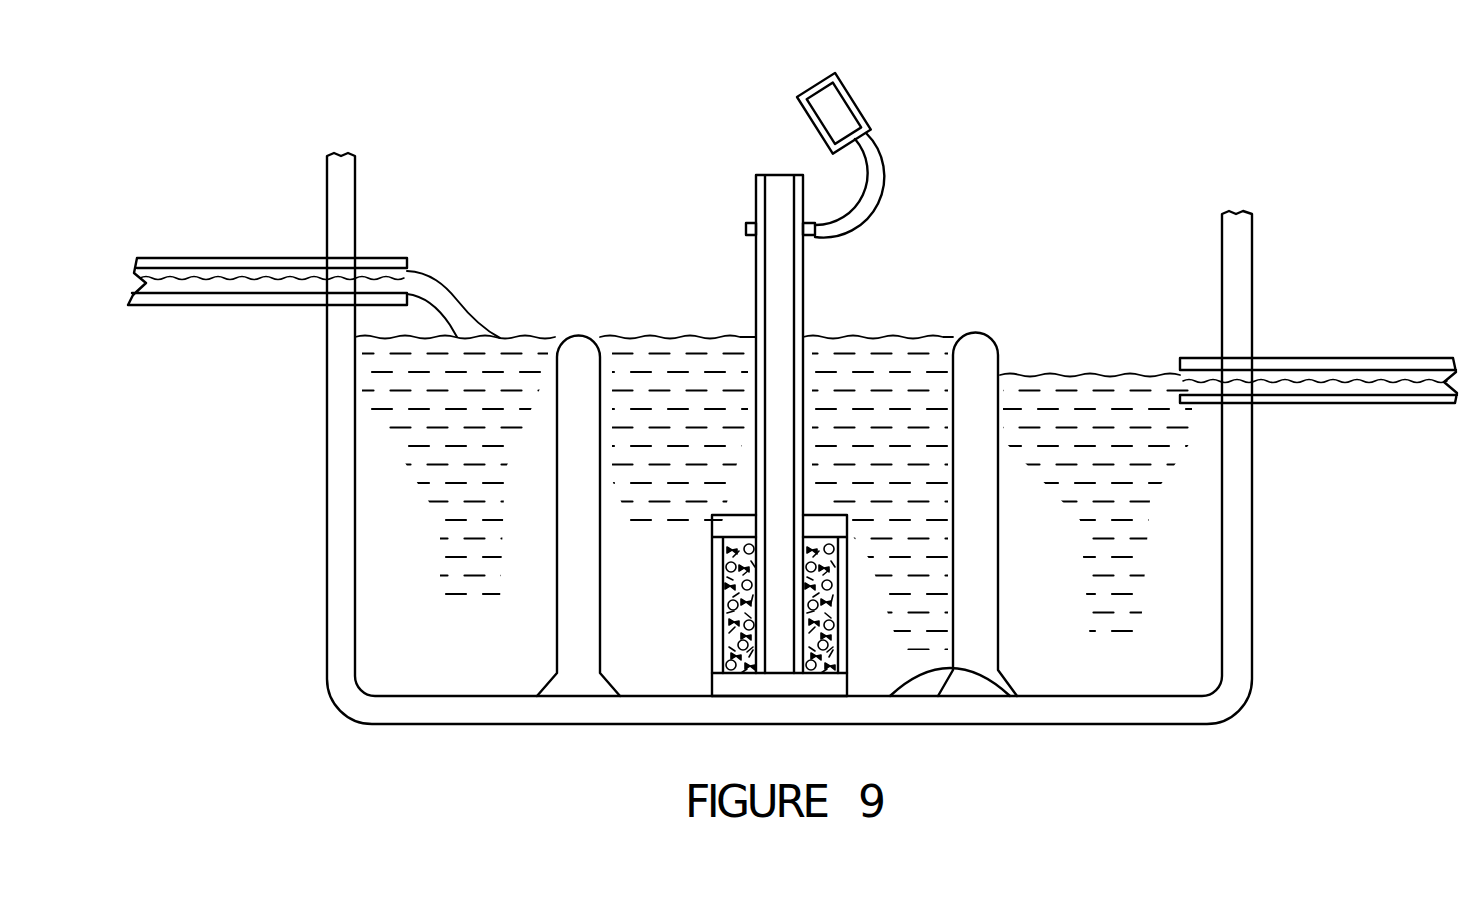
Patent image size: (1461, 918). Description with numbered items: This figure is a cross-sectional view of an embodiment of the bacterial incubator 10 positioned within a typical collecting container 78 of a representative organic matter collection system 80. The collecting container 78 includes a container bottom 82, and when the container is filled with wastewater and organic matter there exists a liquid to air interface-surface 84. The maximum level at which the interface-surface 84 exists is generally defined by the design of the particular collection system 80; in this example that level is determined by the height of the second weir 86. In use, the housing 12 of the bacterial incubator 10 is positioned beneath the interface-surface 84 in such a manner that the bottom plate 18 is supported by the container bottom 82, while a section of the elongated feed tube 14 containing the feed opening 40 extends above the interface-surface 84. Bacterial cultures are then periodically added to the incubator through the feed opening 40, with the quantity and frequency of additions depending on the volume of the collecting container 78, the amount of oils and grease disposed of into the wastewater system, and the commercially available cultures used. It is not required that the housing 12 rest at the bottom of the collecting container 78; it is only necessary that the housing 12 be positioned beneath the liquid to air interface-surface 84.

The organic matter collection system 80 is at (602, 150).
The collecting container 78 is at (703, 645).
The bacterial incubator 10 is at (848, 465).
The second weir 86 is at (975, 528).
The container bottom 82 is at (960, 668).
The elongated feed tube 14 is at (755, 300).
The feed opening 40 is at (780, 192).
The liquid to air interface-surface 84 is at (863, 337).
The housing 12 is at (847, 597).
The bottom plate 18 is at (737, 682).